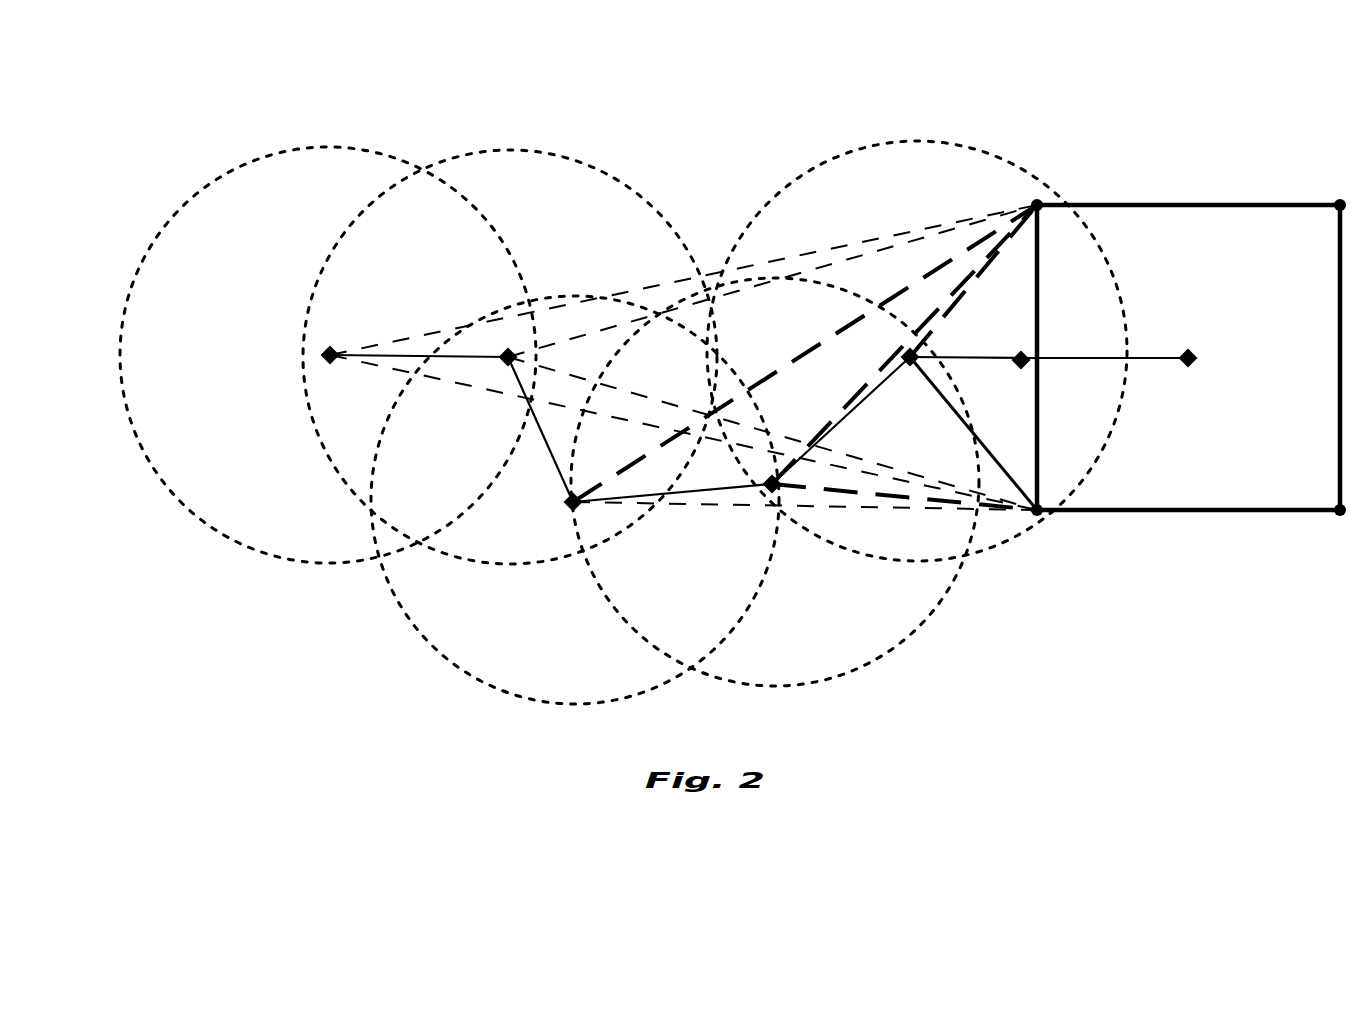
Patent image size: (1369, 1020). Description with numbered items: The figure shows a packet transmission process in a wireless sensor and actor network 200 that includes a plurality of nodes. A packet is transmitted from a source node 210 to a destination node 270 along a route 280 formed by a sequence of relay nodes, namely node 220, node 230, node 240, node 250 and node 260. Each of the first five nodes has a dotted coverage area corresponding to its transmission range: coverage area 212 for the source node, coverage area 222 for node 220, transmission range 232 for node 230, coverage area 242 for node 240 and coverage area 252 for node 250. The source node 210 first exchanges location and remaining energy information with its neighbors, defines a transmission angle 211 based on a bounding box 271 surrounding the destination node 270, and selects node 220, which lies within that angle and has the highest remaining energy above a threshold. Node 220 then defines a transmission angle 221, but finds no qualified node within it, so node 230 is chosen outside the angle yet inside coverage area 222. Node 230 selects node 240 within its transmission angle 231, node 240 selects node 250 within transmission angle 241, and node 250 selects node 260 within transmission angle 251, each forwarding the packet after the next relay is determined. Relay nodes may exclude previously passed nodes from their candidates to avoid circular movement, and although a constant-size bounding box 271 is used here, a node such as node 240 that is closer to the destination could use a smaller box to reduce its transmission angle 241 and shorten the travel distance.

The wireless sensor and actor network 200 is at (802, 277).
The source node 210 is at (261, 385).
The transmission angle 211 is at (419, 308).
The coverage area 212 is at (328, 327).
The node 220 is at (458, 401).
The transmission angle 221 is at (772, 281).
The coverage area 222 is at (510, 328).
The node 230 is at (520, 548).
The transmission angle 231 is at (805, 394).
The transmission range 232 is at (551, 501).
The node 240 is at (736, 512).
The transmission angle 241 is at (904, 528).
The coverage area 242 is at (792, 484).
The node 250 is at (885, 400).
The transmission angle 251 is at (982, 479).
The coverage area 252 is at (917, 317).
The node 260 is at (1064, 336).
The destination node 270 is at (1233, 344).
The bounding box 271 is at (1189, 330).
The route 280 is at (1116, 332).